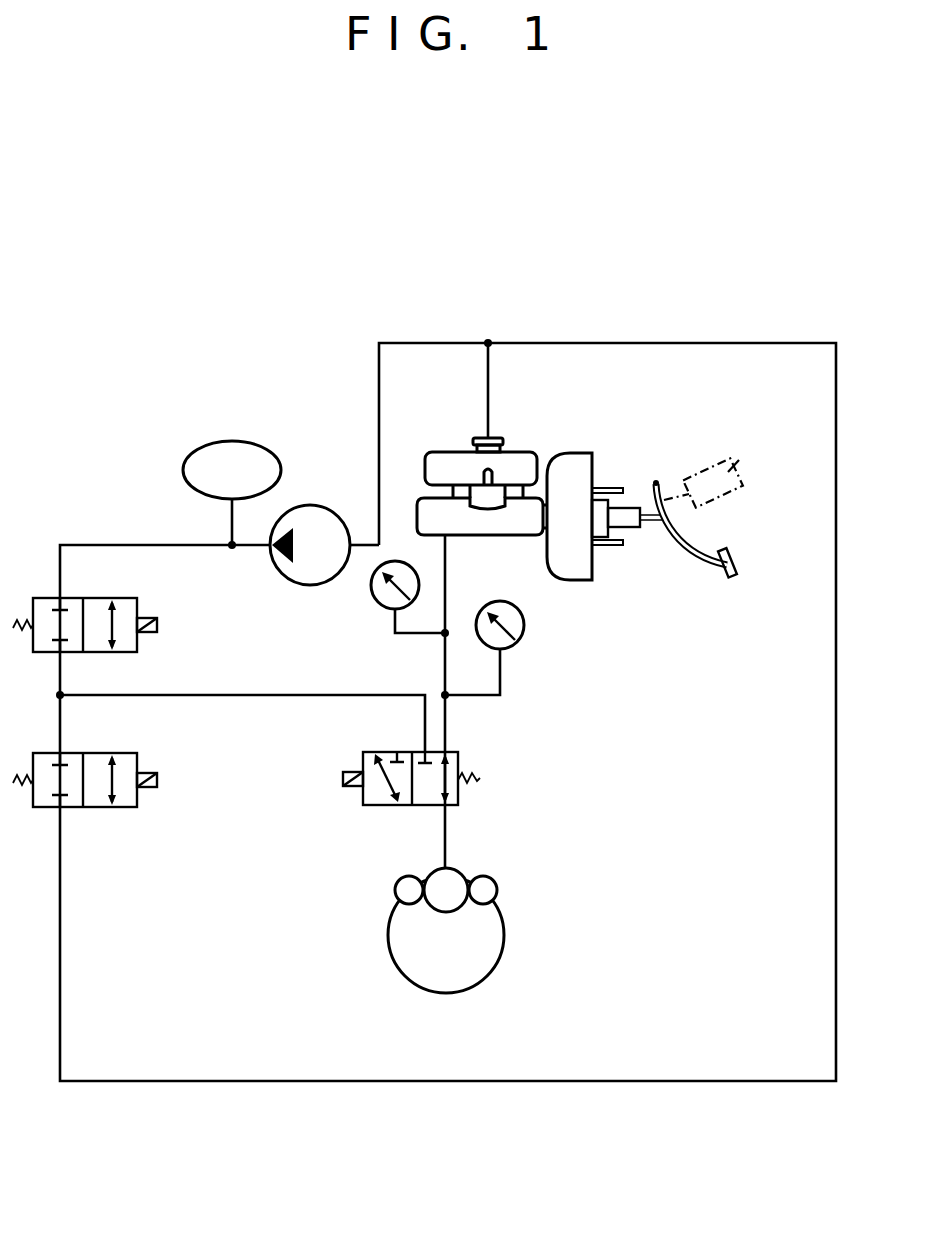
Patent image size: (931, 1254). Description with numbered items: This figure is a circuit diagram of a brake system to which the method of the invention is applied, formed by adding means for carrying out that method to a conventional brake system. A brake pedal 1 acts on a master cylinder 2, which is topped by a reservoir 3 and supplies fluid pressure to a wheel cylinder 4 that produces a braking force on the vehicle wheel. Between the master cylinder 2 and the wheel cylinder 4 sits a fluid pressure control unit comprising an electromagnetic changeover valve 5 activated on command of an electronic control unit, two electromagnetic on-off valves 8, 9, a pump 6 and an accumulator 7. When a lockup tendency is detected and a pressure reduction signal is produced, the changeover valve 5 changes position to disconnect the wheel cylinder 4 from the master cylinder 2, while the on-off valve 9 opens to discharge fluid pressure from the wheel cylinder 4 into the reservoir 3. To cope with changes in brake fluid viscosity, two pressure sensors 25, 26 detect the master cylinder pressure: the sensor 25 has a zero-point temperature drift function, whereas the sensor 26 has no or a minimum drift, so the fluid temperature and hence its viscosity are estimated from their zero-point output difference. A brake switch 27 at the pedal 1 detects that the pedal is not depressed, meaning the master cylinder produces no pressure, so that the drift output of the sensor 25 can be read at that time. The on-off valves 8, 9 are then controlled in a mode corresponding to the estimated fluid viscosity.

The brake pedal 1 is at (698, 558).
The master cylinder 2 is at (505, 530).
The reservoir 3 is at (448, 452).
The wheel cylinder 4 is at (460, 868).
The electromagnetic changeover valve 5 is at (462, 752).
The pump 6 is at (297, 582).
The accumulator 7 is at (228, 442).
The electromagnetic on-off valve 8 is at (130, 605).
The electromagnetic on-off valve 9 is at (132, 758).
The pressure sensor 25 is at (524, 633).
The pressure sensor 26 is at (380, 605).
The brake switch 27 is at (735, 457).